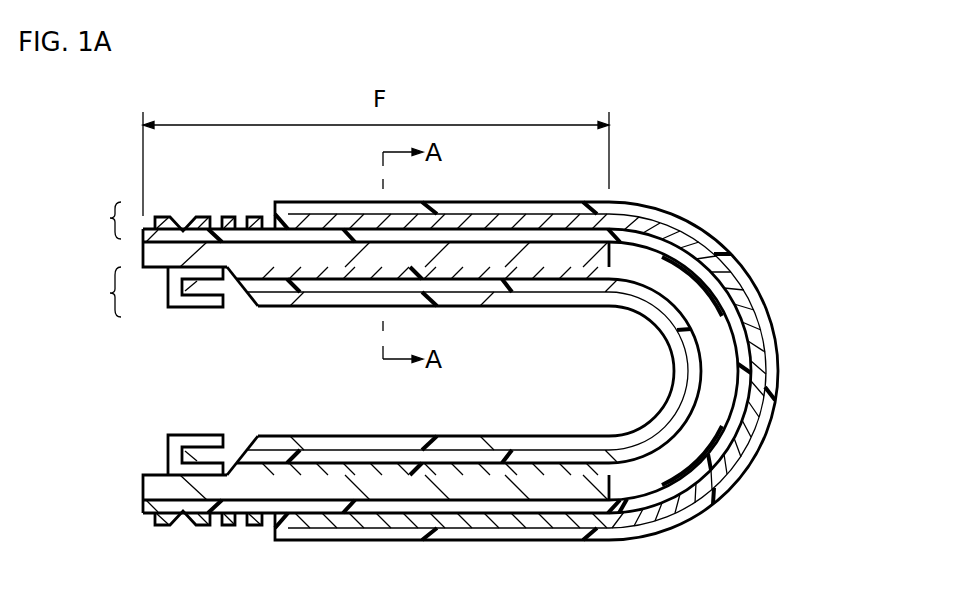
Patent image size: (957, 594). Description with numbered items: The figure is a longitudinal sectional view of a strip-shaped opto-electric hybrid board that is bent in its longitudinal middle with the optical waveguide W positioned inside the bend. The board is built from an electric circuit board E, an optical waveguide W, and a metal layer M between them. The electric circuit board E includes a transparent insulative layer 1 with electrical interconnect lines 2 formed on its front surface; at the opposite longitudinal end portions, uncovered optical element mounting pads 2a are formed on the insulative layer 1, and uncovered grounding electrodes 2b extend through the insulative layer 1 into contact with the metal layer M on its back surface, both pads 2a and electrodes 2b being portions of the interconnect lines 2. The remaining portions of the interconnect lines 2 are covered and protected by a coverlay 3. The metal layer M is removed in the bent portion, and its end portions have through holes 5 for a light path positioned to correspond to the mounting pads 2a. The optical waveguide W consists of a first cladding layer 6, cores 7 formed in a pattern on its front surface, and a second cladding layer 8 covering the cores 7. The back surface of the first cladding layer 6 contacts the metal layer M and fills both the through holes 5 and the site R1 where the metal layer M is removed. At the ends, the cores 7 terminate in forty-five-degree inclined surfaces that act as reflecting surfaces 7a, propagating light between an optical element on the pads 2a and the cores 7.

The insulative layer 1 is at (527, 238).
The electrical interconnect lines 2 is at (482, 222).
The optical element mounting pads 2a is at (256, 216).
The grounding electrodes 2b is at (184, 216).
The coverlay 3 is at (324, 203).
The through holes 5 is at (252, 475).
The first cladding layer 6 is at (648, 313).
The cores 7 is at (582, 288).
The reflecting surfaces 7a is at (230, 447).
The second cladding layer 8 is at (517, 300).
The site where the metal layer is removed R1 is at (647, 248).
The electric circuit board E is at (101, 220).
The metal layer M is at (155, 254).
The optical waveguide W is at (100, 292).